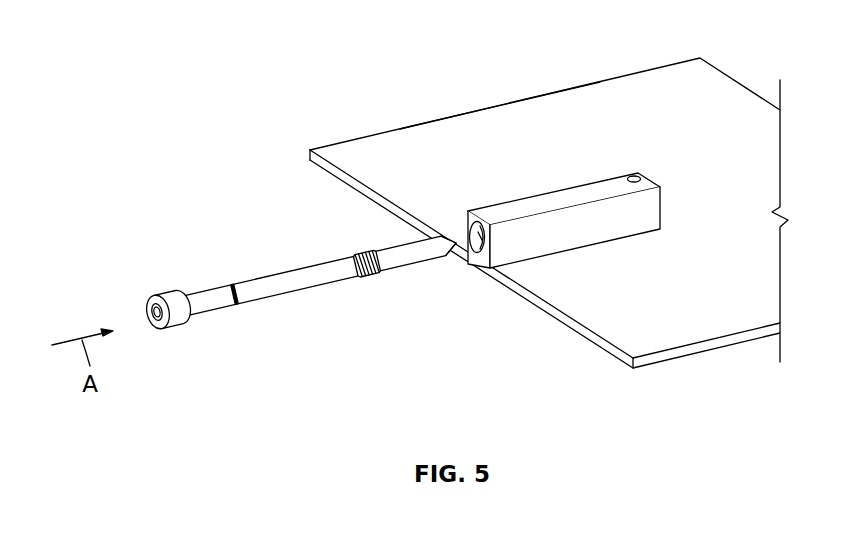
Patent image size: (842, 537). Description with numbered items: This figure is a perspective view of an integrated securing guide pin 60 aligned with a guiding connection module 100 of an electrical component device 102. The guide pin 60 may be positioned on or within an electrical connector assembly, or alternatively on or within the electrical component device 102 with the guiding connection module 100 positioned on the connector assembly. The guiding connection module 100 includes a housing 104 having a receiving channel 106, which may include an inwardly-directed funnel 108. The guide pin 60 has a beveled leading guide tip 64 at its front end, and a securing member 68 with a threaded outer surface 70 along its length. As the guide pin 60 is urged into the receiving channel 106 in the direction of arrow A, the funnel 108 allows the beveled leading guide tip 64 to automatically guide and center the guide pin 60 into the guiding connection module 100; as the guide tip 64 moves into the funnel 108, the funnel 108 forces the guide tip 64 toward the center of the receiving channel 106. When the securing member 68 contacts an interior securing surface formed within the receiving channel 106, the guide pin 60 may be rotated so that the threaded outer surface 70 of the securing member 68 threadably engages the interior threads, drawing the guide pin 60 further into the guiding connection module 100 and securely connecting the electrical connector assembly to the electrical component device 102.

The integrated securing guide pin 60 is at (296, 295).
The beveled leading guide tip 64 is at (451, 251).
The securing member 68 is at (357, 254).
The threaded outer surface 70 is at (363, 273).
The guiding connection module 100 is at (515, 292).
The electrical component device 102 is at (521, 100).
The housing 104 is at (500, 212).
The receiving channel 106 is at (473, 246).
The inwardly-directed funnel 108 is at (466, 226).